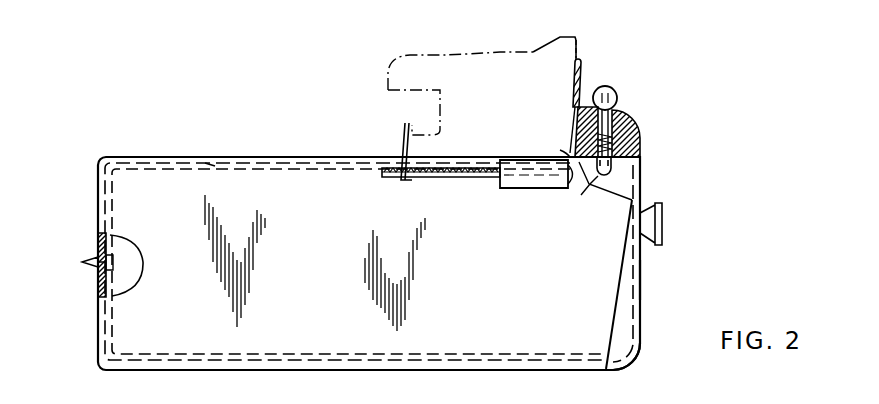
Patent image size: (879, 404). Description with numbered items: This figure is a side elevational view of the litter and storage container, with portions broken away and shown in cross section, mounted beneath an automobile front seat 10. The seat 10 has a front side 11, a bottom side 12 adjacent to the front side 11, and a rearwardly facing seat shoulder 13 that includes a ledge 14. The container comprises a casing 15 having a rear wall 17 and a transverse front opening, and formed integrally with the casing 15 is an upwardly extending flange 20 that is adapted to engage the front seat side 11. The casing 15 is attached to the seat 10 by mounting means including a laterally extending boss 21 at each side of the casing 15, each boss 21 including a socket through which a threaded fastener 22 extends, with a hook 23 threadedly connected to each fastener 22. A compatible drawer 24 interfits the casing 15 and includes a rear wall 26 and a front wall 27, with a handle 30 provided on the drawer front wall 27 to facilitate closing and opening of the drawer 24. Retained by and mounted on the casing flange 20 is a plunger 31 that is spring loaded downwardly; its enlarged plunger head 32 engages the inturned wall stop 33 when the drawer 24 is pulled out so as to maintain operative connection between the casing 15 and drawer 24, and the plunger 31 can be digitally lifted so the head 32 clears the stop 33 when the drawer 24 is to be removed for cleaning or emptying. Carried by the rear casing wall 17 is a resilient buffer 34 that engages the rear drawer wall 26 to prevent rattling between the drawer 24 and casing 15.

The automobile front seat 10 is at (561, 36).
The front side 11 is at (577, 39).
The bottom side 12 is at (433, 170).
The seat shoulder 13 is at (440, 103).
The ledge 14 is at (441, 127).
The casing 15 is at (614, 310).
The rear wall 17 is at (98, 191).
The flange 20 is at (582, 68).
The boss 21 is at (527, 189).
The threaded fastener 22 is at (473, 177).
The hook 23 is at (403, 125).
The drawer 24 is at (638, 351).
The rear wall 26 is at (113, 199).
The front wall 27 is at (641, 278).
The handle 30 is at (662, 207).
The plunger 31 is at (617, 97).
The plunger head 32 is at (590, 186).
The stop 33 is at (206, 164).
The resilient buffer 34 is at (112, 263).